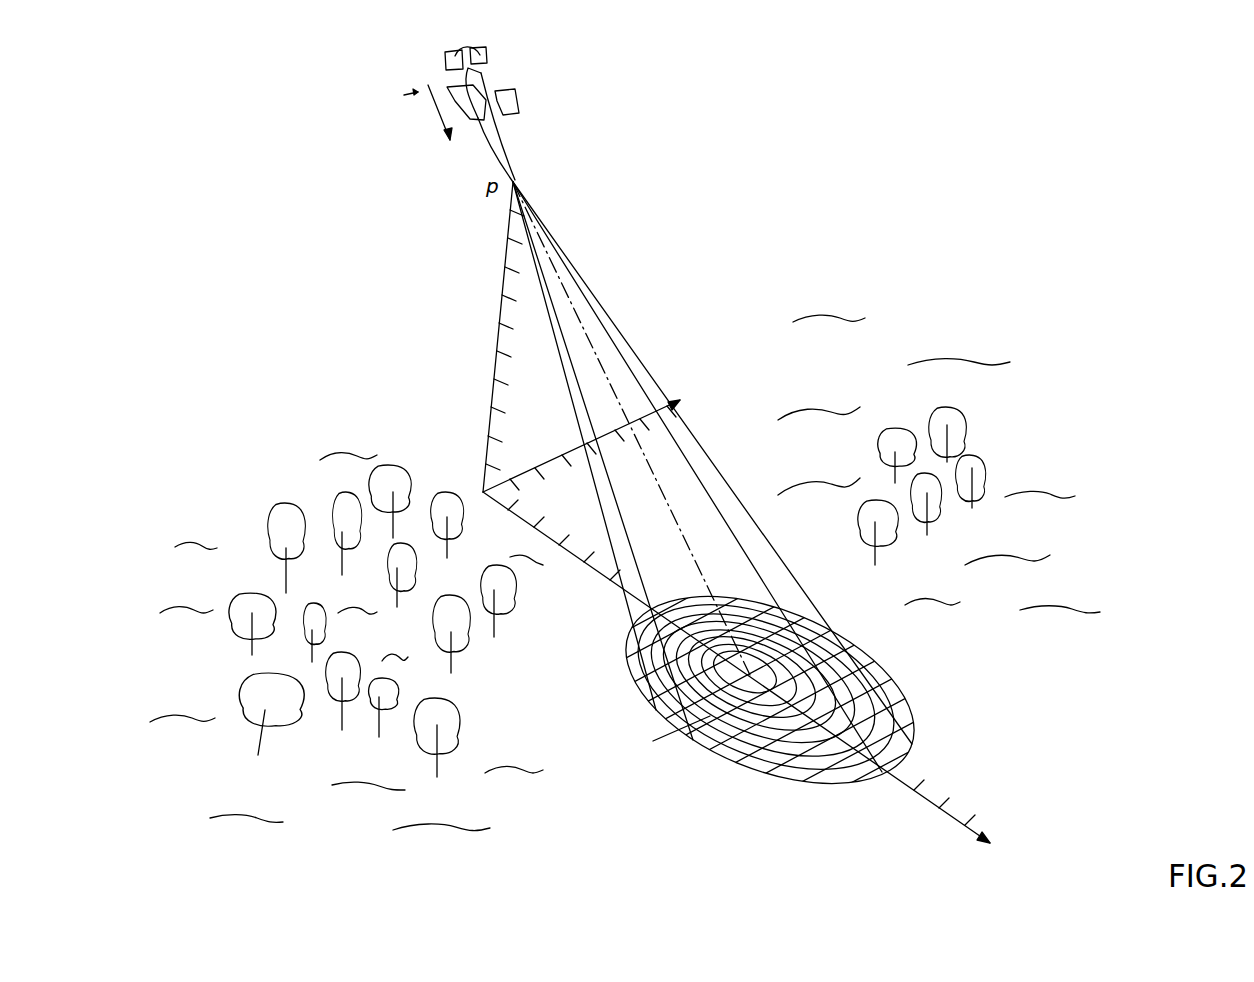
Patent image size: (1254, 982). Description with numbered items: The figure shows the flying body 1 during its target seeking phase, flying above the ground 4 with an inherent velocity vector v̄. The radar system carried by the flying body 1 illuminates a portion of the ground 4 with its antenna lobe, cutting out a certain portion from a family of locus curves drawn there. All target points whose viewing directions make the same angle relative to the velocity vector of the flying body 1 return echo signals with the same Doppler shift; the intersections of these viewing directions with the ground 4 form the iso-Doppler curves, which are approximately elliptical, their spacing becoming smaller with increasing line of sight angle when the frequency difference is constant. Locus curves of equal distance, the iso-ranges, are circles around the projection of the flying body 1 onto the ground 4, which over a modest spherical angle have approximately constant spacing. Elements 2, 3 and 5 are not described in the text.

The flying body 1 is at (507, 153).
The radar beam / isodoppler lines 2 is at (630, 680).
The ground reference frame (x, y axes) 3 is at (743, 524).
The ground 4 is at (1030, 495).
The isorange contours 5 is at (898, 706).